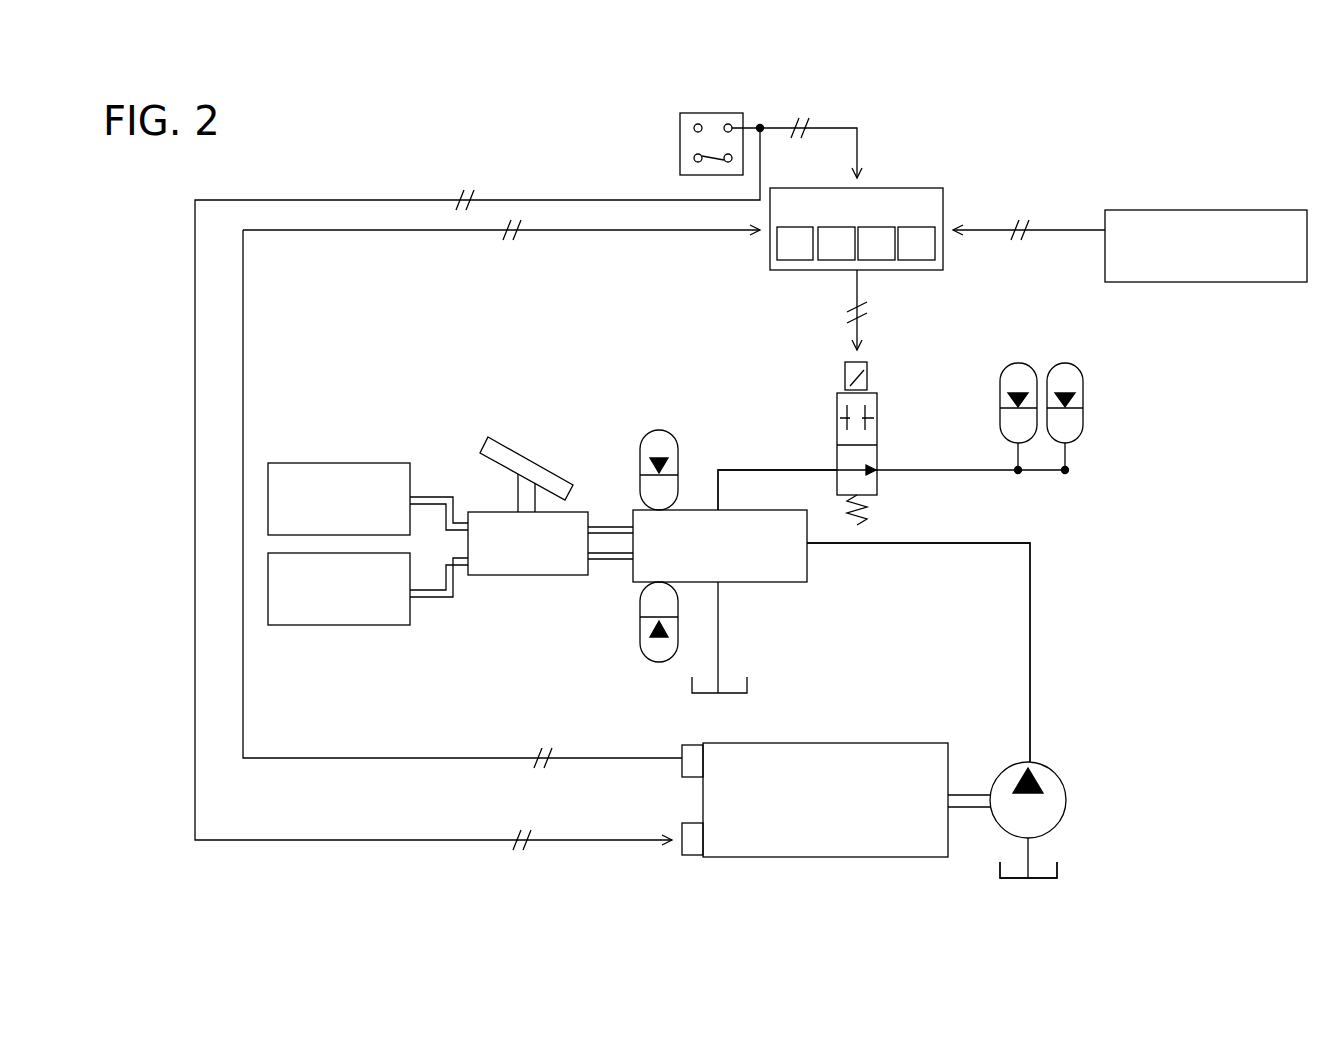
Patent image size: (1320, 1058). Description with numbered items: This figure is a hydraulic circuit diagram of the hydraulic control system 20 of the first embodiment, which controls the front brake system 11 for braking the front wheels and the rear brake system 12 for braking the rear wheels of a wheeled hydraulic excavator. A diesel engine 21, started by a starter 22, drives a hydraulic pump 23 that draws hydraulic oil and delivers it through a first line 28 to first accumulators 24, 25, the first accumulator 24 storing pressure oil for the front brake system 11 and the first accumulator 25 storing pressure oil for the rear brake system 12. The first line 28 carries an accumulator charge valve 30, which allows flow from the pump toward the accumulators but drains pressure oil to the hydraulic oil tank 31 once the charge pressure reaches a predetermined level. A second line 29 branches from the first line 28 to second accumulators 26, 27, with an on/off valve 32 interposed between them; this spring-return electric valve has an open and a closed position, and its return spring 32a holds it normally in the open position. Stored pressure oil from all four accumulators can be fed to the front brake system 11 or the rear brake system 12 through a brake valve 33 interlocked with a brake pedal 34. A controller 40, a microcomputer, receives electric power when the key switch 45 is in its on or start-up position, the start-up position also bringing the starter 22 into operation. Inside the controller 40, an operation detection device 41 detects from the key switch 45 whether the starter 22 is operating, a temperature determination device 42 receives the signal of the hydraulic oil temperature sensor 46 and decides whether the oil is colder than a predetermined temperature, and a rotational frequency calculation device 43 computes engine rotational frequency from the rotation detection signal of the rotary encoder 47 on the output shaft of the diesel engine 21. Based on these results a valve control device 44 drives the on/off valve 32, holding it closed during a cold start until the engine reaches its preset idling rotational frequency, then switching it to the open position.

The front brake system 11 is at (343, 463).
The rear brake system 12 is at (350, 625).
The hydraulic control system 20 is at (333, 142).
The diesel engine 21 is at (838, 743).
The starter 22 is at (682, 824).
The hydraulic pump 23 is at (1055, 770).
The first accumulator 24 is at (670, 432).
The first accumulator 25 is at (652, 662).
The second accumulator 26 is at (1027, 365).
The second accumulator 27 is at (1075, 365).
The first line 28 is at (1032, 628).
The second line 29 is at (735, 470).
The accumulator charge valve 30 is at (807, 582).
The hydraulic oil tank 31 is at (1060, 870).
The on/off valve 32 is at (894, 434).
The return spring 32a is at (870, 517).
The brake valve 33 is at (522, 575).
The brake pedal 34 is at (528, 450).
The controller 40 is at (844, 230).
The operation detection device 41 is at (793, 260).
The temperature determination device 42 is at (835, 261).
The rotational frequency calculation device 43 is at (877, 261).
The valve control device 44 is at (915, 261).
The key switch 45 is at (680, 113).
The hydraulic oil temperature sensor 46 is at (1193, 210).
The rotary encoder 47 is at (690, 745).